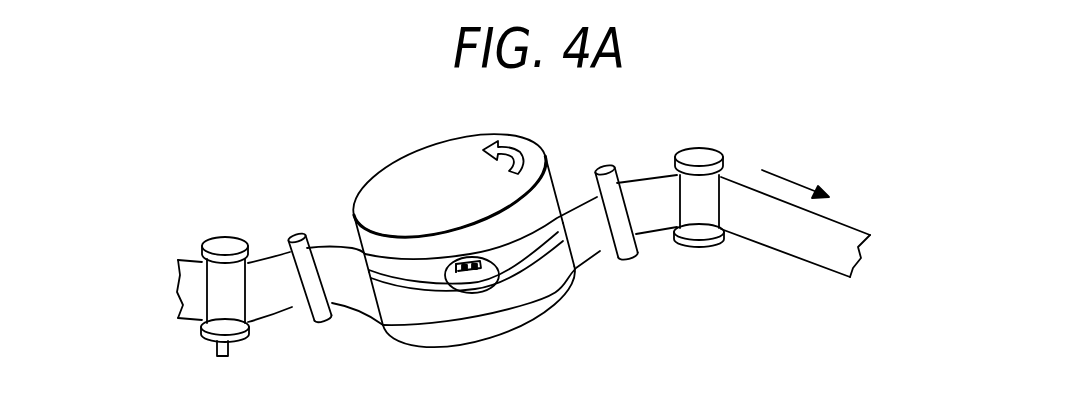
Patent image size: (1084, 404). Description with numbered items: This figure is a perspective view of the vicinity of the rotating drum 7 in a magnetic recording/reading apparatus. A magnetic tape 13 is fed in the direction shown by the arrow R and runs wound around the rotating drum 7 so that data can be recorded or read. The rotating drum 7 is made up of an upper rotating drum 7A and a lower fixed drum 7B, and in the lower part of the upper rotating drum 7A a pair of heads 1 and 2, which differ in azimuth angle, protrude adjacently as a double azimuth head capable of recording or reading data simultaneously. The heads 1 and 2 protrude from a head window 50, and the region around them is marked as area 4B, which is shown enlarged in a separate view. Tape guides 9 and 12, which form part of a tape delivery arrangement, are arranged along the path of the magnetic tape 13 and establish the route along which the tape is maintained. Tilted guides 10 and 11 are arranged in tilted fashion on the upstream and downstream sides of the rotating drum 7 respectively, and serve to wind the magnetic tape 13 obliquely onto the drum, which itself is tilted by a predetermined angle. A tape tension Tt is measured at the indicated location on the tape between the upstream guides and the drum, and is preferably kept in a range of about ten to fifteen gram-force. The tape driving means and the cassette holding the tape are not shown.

The head 1 is at (470, 283).
The head 2 is at (477, 281).
The area 4B is at (460, 292).
The rotating drum 7 is at (472, 217).
The upper rotating drum 7A is at (390, 182).
The lower fixed drum 7B is at (550, 295).
The tape guide 9 is at (224, 245).
The tilted guide 10 is at (296, 234).
The tilted guide 11 is at (606, 163).
The tape guide 12 is at (700, 152).
The magnetic tape 13 is at (787, 237).
The head window 50 is at (484, 254).
The tape tension Tt is at (332, 247).
The arrow R is at (790, 180).